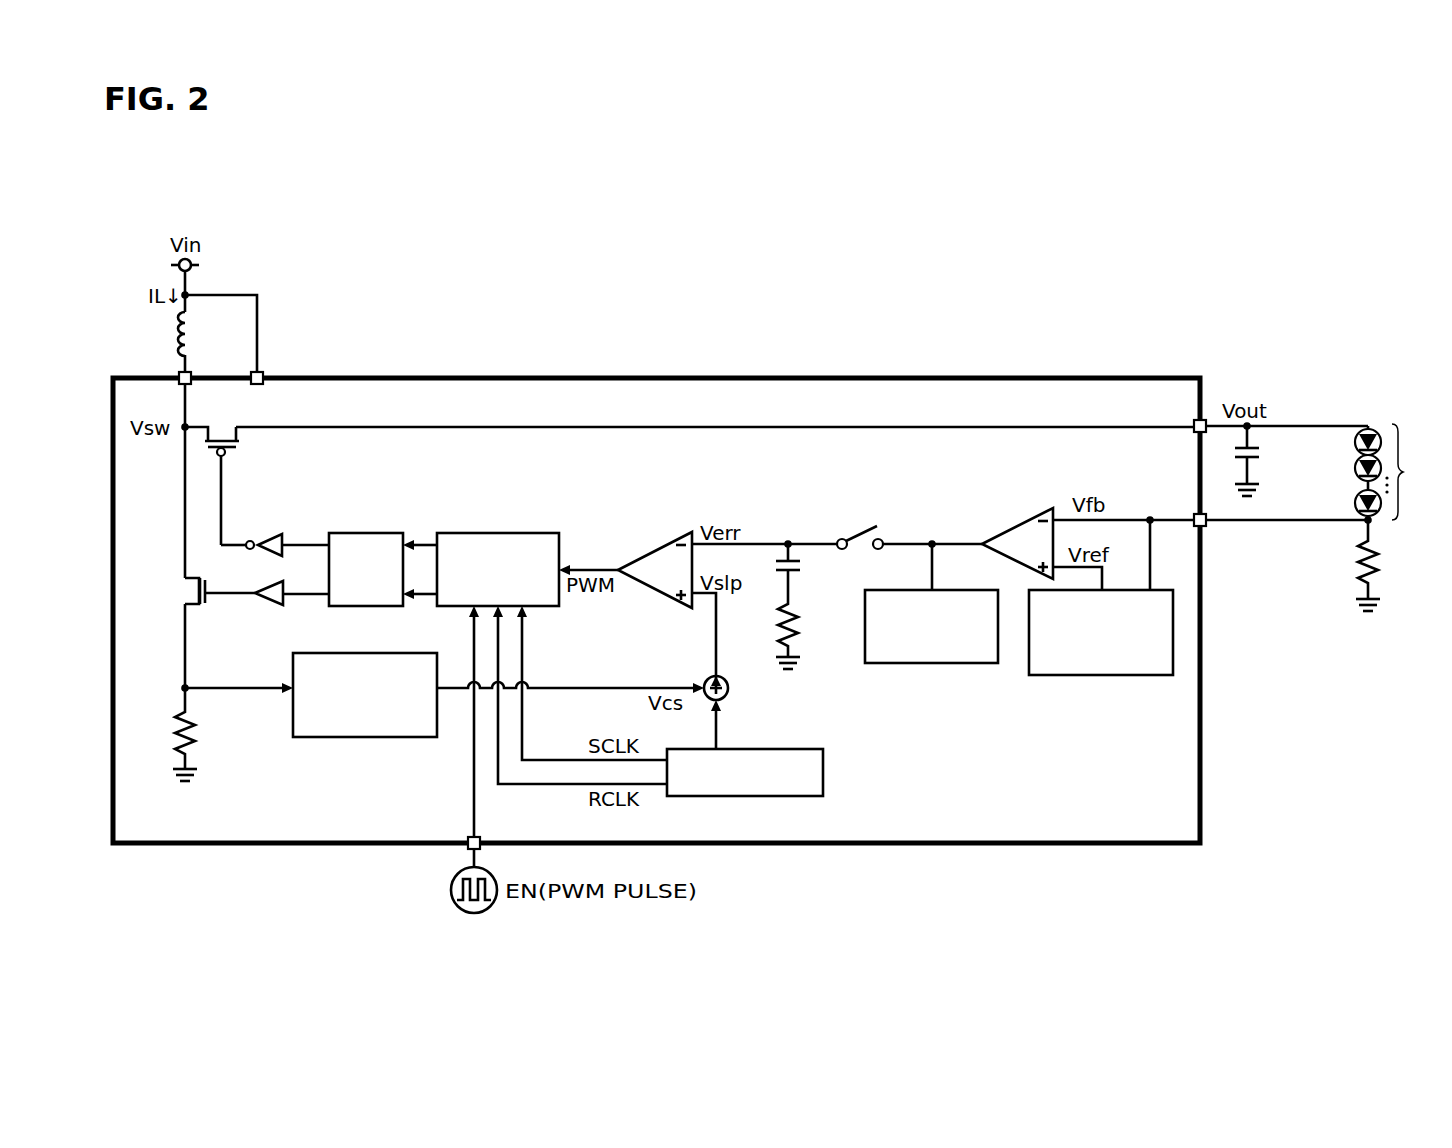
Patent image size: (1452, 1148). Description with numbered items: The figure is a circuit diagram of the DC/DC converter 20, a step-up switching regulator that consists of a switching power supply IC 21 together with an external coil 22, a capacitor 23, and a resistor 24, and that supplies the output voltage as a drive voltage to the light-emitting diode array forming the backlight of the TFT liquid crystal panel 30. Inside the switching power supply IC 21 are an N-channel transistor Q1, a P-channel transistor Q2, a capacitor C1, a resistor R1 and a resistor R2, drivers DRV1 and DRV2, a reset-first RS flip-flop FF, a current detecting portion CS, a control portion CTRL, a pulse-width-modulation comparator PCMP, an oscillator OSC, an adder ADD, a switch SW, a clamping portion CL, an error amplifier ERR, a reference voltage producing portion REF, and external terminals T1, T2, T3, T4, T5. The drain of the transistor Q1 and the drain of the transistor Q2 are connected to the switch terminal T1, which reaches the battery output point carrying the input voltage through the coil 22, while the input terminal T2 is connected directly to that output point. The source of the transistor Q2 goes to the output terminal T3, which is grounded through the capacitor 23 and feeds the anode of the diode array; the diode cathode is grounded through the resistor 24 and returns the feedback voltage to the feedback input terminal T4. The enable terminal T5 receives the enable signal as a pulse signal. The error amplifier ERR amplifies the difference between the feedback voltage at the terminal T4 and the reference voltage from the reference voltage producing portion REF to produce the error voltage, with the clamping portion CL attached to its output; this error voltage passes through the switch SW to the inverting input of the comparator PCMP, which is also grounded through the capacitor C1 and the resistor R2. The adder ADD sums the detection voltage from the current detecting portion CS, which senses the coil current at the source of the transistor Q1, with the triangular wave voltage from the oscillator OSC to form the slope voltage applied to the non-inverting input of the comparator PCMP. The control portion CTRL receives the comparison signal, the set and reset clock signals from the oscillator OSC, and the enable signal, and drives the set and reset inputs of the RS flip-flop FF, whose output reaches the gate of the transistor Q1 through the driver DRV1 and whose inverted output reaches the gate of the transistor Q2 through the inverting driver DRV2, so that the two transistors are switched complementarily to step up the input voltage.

The DC/DC converter 20 is at (1304, 361).
The switching power supply IC 21 is at (655, 376).
The coil 22 is at (176, 338).
The capacitor 23 is at (1260, 455).
The resistor 24 is at (1380, 560).
The TFT liquid crystal panel 30 is at (1442, 433).
The external terminal (switch terminal) T1 is at (192, 384).
The external terminal (input terminal) T2 is at (264, 384).
The external terminal (output terminal) T3 is at (1192, 420).
The external terminal (feedback input terminal) T4 is at (1192, 514).
The external terminal (enable terminal) T5 is at (467, 840).
The N-channel field-effect transistor Q1 is at (186, 594).
The P-channel field-effect transistor Q2 is at (232, 448).
The driver DRV1 is at (271, 606).
The driver (inverter) DRV2 is at (282, 537).
The reset-first RS flip-flop FF is at (368, 533).
The control portion CTRL is at (500, 533).
The PWM comparator PCMP is at (644, 548).
The adder ADD is at (698, 674).
The capacitor C1 is at (800, 567).
The resistor R2 is at (799, 624).
The switch SW is at (868, 532).
The clamping portion CL is at (931, 664).
The error amplifier ERR is at (1020, 521).
The reference voltage producing portion REF is at (1122, 676).
The current detecting portion CS is at (368, 653).
The resistor R1 is at (174, 733).
The oscillator OSC is at (824, 772).